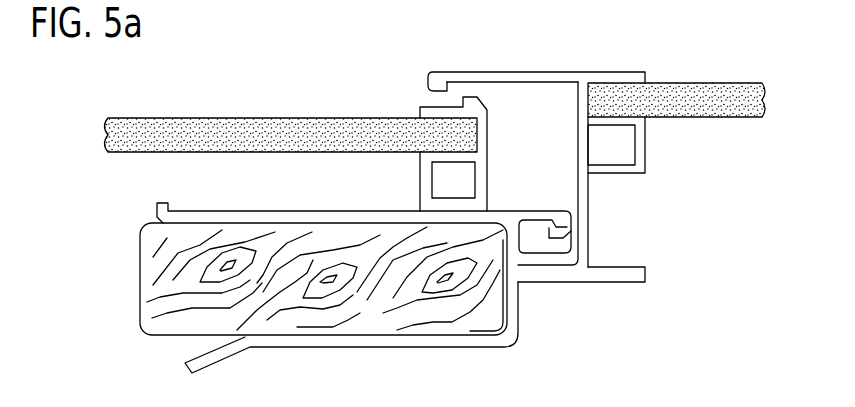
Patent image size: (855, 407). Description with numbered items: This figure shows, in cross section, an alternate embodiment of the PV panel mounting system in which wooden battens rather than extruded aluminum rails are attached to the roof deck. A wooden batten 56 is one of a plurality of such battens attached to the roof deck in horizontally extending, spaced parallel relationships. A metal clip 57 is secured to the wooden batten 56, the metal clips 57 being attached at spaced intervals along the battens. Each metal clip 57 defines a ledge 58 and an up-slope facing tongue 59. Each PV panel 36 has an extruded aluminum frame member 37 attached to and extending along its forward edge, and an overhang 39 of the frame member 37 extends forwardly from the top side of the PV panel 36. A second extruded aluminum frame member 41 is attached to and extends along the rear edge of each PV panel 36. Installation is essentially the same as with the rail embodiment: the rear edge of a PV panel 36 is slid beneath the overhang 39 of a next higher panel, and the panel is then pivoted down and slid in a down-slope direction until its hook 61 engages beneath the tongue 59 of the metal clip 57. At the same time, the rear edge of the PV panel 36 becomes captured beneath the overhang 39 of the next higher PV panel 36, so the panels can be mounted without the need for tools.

The PV panel 36 is at (262, 138).
The frame member 37 is at (550, 161).
The overhang 39 is at (500, 80).
The second frame member 41 is at (426, 181).
The wooden batten 56 is at (176, 273).
The metal clip 57 is at (380, 262).
The ledge 58 is at (613, 268).
The tongue 59 is at (545, 211).
The hook 61 is at (547, 257).